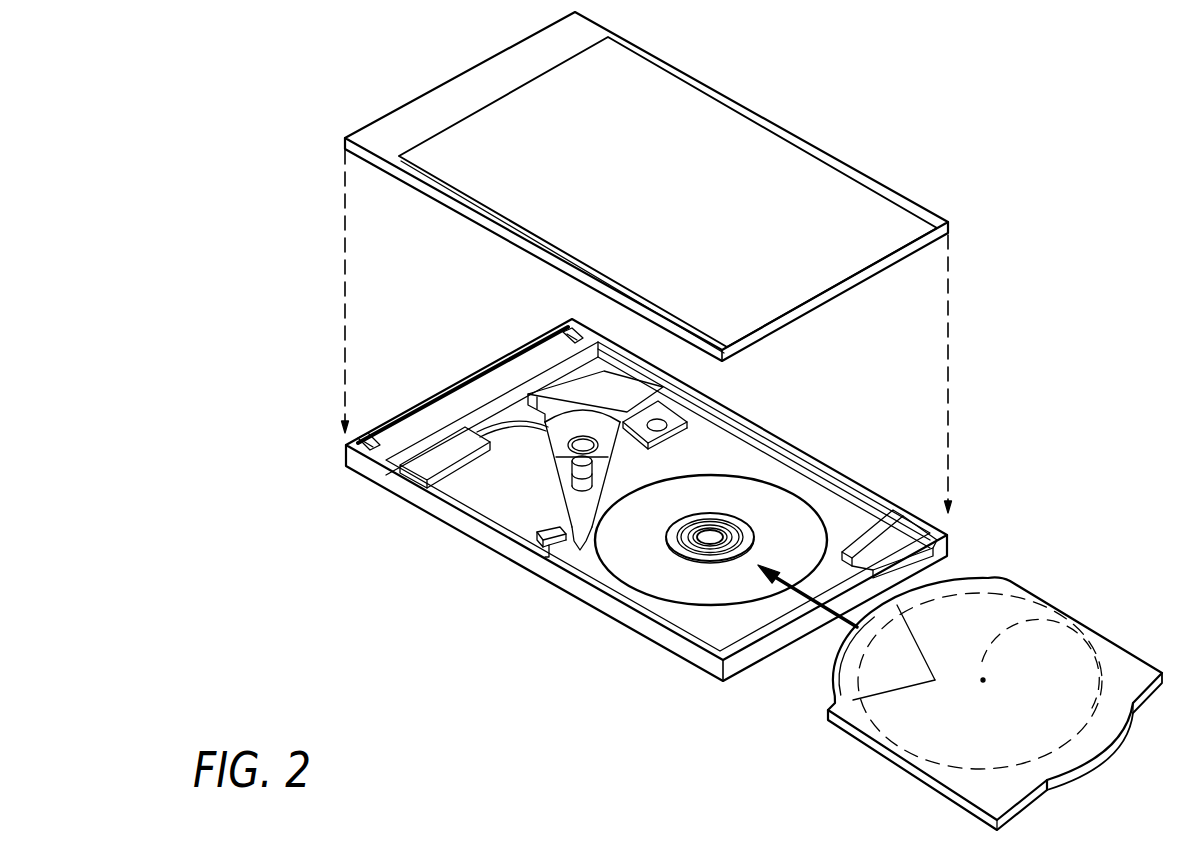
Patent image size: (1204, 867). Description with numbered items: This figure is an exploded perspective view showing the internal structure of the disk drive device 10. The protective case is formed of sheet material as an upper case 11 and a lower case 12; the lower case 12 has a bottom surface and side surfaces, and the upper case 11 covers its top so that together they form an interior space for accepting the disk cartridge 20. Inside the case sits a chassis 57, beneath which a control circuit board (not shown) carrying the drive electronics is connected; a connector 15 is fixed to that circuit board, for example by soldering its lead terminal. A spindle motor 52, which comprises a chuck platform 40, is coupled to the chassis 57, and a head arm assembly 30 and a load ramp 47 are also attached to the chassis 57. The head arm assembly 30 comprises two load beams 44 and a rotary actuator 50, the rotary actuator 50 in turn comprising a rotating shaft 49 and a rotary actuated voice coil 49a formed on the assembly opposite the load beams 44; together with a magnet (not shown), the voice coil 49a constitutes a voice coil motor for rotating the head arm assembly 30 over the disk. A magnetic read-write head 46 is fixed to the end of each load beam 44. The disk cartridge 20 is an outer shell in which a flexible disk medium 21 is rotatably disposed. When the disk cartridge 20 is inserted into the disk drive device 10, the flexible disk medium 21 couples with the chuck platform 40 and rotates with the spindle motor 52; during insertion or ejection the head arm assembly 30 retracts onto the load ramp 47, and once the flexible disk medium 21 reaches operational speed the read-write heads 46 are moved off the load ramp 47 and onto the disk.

The disk drive device 10 is at (683, 359).
The upper case 11 is at (420, 118).
The lower case 12 is at (608, 500).
The connector 15 is at (519, 357).
The disk cartridge 20 is at (980, 748).
The flexible disk medium 21 is at (1035, 615).
The head arm assembly 30 is at (545, 487).
The chuck platform 40 is at (690, 578).
The load beams 44 is at (585, 500).
The magnetic read-write head 46 is at (578, 552).
The load ramp 47 is at (543, 548).
The rotating shaft 49 is at (576, 442).
The voice coil 49a is at (580, 405).
The rotary actuator 50 is at (565, 495).
The spindle motor 52 is at (640, 598).
The chassis 57 is at (768, 466).